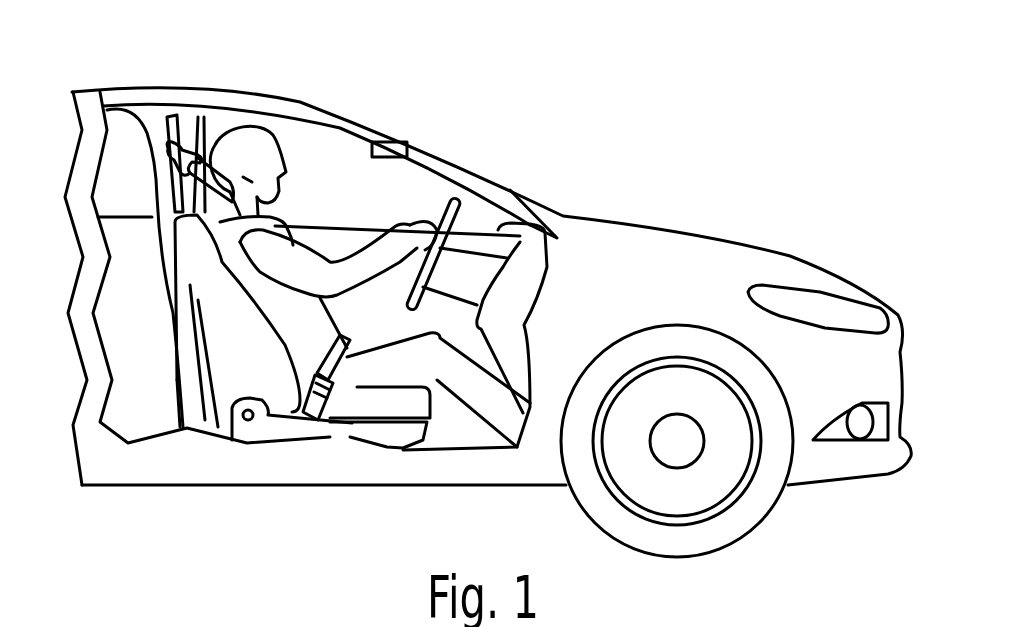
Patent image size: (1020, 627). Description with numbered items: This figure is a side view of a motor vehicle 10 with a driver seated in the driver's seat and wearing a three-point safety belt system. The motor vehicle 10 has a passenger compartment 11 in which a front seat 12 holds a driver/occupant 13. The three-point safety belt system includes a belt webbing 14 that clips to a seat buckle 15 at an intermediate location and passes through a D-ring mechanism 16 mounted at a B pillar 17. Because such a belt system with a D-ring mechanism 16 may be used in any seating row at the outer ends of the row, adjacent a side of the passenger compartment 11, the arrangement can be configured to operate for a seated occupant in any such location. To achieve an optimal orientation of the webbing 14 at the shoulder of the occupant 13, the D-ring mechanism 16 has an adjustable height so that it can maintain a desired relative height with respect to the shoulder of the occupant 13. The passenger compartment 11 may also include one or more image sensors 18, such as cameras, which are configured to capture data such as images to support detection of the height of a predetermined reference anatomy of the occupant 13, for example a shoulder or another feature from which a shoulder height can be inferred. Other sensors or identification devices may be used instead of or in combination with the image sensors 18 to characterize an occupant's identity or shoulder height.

The motor vehicle 10 is at (697, 220).
The passenger compartment 11 is at (130, 413).
The front seat 12 is at (258, 433).
The driver/occupant 13 is at (293, 260).
The belt webbing 14 is at (338, 358).
The seat buckle 15 is at (320, 405).
The D-ring mechanism 16 is at (183, 145).
The B pillar 17 is at (157, 192).
The image sensor 18 is at (393, 147).